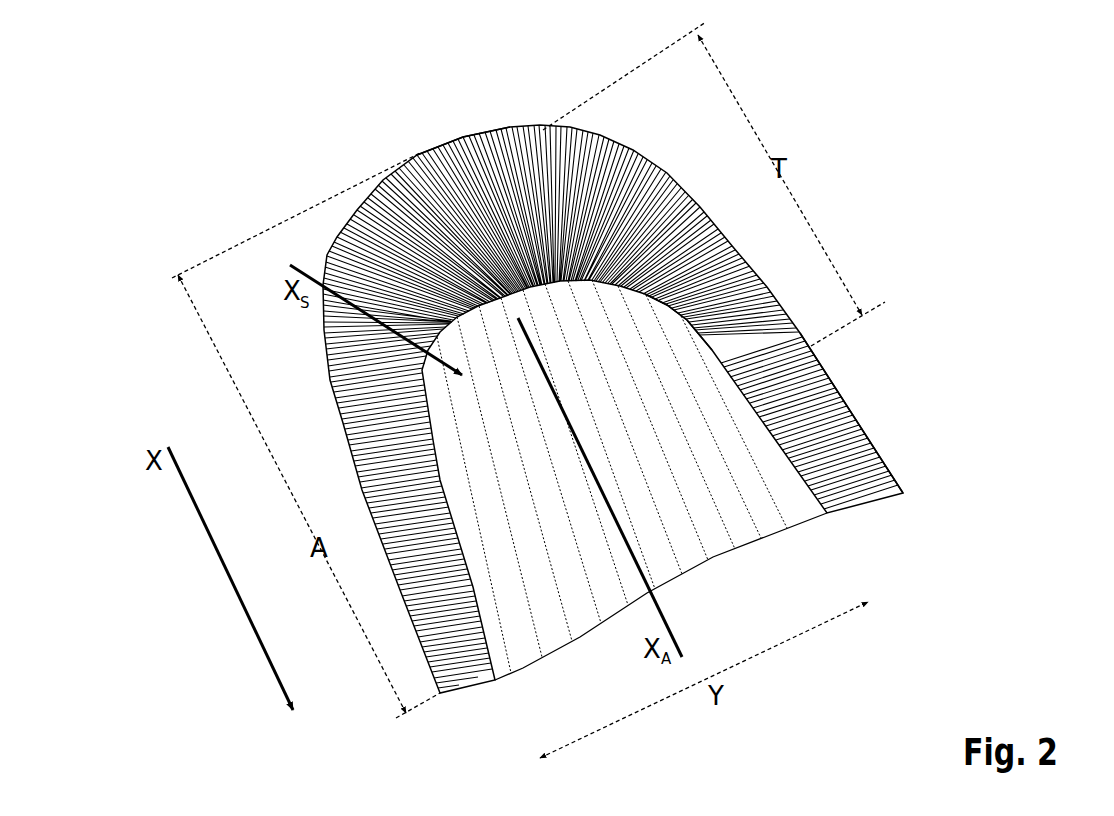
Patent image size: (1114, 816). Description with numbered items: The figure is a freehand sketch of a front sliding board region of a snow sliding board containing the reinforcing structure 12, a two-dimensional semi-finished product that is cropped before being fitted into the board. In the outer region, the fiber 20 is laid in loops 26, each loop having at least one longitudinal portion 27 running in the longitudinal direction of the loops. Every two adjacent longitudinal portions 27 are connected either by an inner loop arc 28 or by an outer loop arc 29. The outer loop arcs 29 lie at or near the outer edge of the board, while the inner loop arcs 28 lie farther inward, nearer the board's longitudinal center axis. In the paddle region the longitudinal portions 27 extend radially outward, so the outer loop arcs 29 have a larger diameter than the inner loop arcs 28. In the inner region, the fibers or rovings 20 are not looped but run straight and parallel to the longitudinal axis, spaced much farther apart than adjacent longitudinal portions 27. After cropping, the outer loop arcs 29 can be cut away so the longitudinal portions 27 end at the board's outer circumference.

The fiber 20 is at (363, 203).
The loops 26 is at (422, 158).
The inner loop arc 28 is at (677, 320).
The longitudinal portion 27 is at (703, 332).
The outer loop arc 29 is at (853, 412).
The reinforcing structure 12 is at (955, 477).